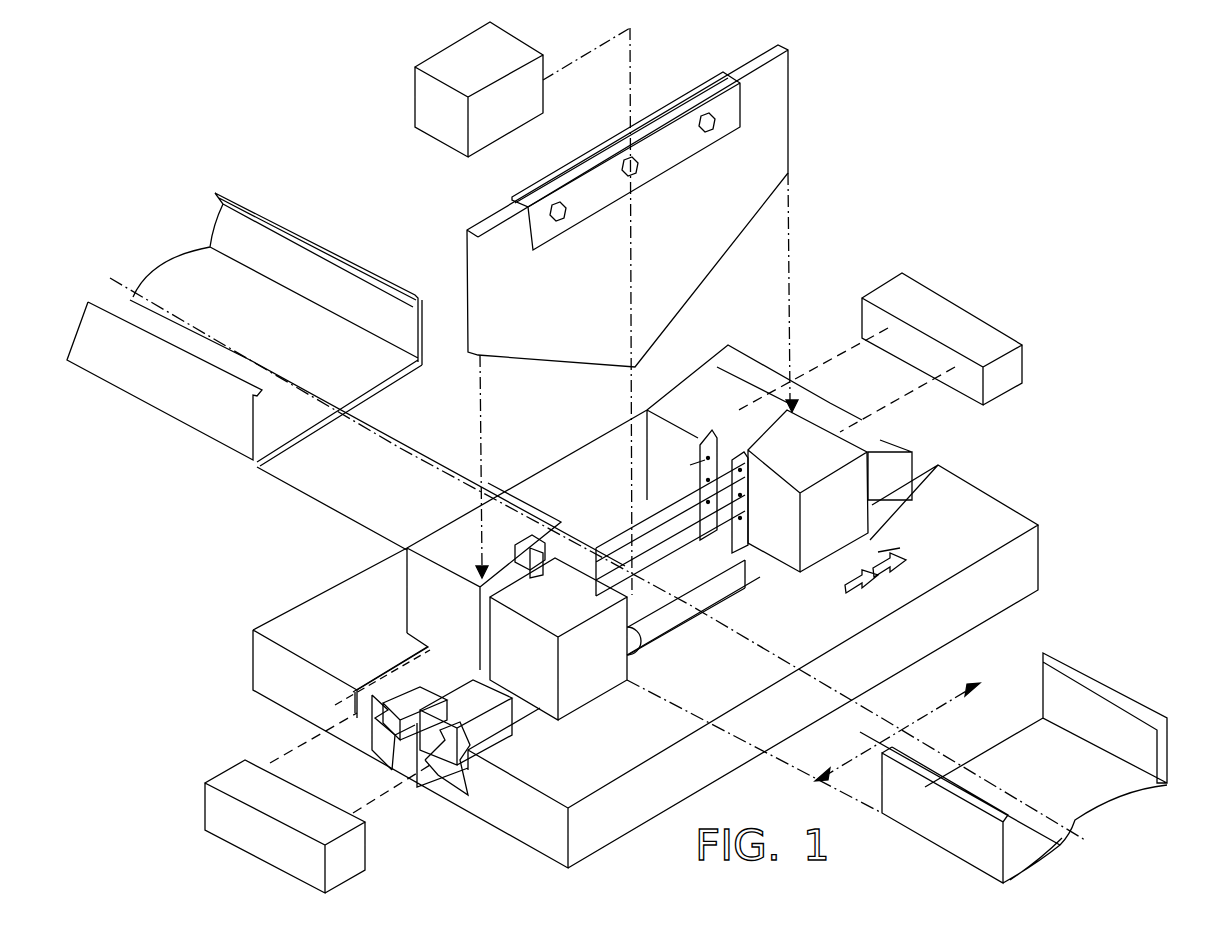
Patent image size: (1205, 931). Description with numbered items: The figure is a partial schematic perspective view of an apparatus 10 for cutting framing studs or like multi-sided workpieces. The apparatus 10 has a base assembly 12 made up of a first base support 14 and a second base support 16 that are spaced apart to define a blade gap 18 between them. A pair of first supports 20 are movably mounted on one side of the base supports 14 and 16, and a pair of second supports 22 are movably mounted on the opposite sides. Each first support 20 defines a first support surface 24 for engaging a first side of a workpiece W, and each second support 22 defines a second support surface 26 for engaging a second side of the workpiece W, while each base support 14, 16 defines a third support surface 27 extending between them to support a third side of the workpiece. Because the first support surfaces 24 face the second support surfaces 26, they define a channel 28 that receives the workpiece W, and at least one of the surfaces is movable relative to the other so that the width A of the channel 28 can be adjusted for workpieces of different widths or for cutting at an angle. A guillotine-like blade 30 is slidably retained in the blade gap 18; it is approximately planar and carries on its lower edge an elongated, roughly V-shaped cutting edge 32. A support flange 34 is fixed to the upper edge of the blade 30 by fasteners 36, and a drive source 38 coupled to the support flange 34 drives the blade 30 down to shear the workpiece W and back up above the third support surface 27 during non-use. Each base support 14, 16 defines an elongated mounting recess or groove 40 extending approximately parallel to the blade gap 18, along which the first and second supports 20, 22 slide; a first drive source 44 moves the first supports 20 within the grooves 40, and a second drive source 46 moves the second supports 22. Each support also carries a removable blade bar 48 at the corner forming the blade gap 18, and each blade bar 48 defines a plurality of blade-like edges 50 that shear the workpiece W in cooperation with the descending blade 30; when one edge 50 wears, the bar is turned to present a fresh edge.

The apparatus 10 is at (896, 142).
The base assembly 12 is at (452, 833).
The first base support 14 is at (1003, 508).
The second base support 16 is at (268, 672).
The blade gap 18 is at (455, 696).
The first supports 20 is at (792, 400).
The second supports 22 is at (460, 545).
The first support surface 24 is at (663, 432).
The second support surface 26 is at (525, 550).
The third support surface 27 is at (665, 527).
The channel 28 is at (594, 468).
The guillotine-like blade 30 is at (795, 90).
The cutting edge 32 is at (748, 225).
The support flange 34 is at (696, 108).
The fasteners 36 is at (708, 130).
The drive source 38 is at (513, 119).
The mounting recess or groove 40 is at (445, 718).
The first drive source 44 is at (956, 332).
The second drive source 46 is at (300, 816).
The blade bar 48 is at (740, 450).
The blade-like edges 50 is at (890, 440).
The workpiece W is at (308, 228).
The width of the channel A is at (930, 720).